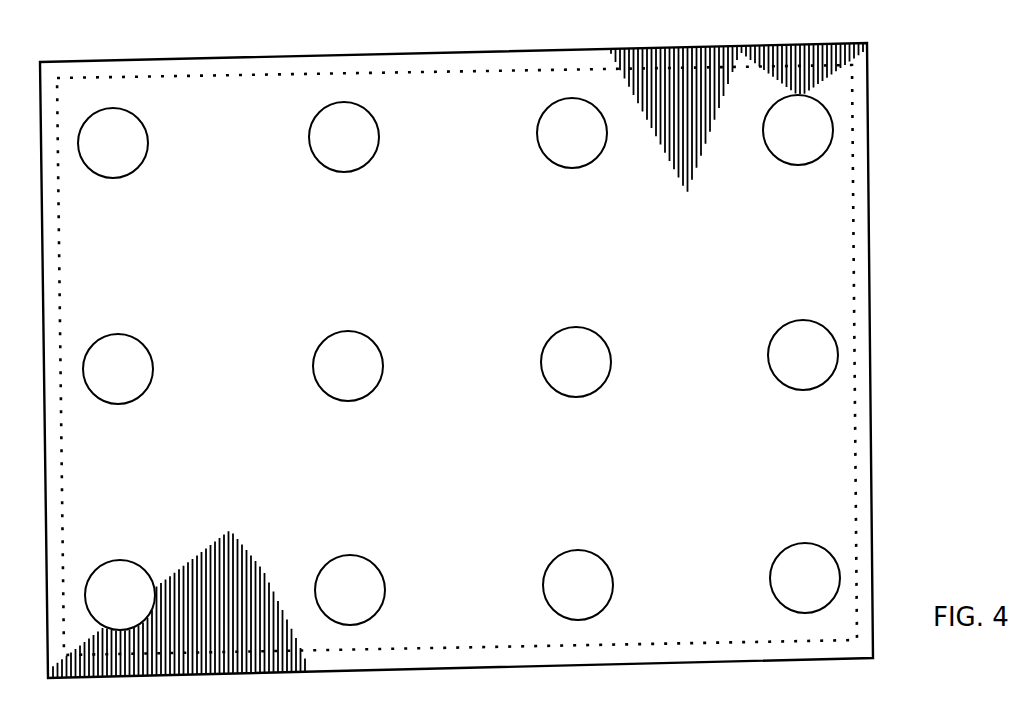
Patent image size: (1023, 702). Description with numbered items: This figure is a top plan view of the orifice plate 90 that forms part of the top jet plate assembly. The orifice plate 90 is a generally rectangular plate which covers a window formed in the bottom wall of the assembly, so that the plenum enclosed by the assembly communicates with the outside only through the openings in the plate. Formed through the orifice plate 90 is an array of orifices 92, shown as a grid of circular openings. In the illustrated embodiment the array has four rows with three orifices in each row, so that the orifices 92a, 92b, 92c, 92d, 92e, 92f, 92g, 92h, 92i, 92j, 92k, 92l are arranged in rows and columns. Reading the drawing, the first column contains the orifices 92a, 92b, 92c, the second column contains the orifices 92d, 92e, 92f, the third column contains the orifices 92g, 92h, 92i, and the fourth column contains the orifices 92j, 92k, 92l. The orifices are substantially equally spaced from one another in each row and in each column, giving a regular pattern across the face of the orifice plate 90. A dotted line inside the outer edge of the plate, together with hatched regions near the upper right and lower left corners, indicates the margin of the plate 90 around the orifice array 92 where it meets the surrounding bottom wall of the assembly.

The orifice plate 90 is at (455, 50).
The orifices 92 is at (263, 90).
The orifice 92a is at (120, 577).
The orifice 92b is at (122, 378).
The orifice 92c is at (100, 157).
The orifice 92d is at (358, 572).
The orifice 92e is at (338, 378).
The orifice 92f is at (343, 152).
The orifice 92g is at (585, 588).
The orifice 92h is at (575, 377).
The orifice 92i is at (558, 148).
The orifice 92j is at (822, 583).
The orifice 92k is at (822, 353).
The orifice 92l is at (812, 123).